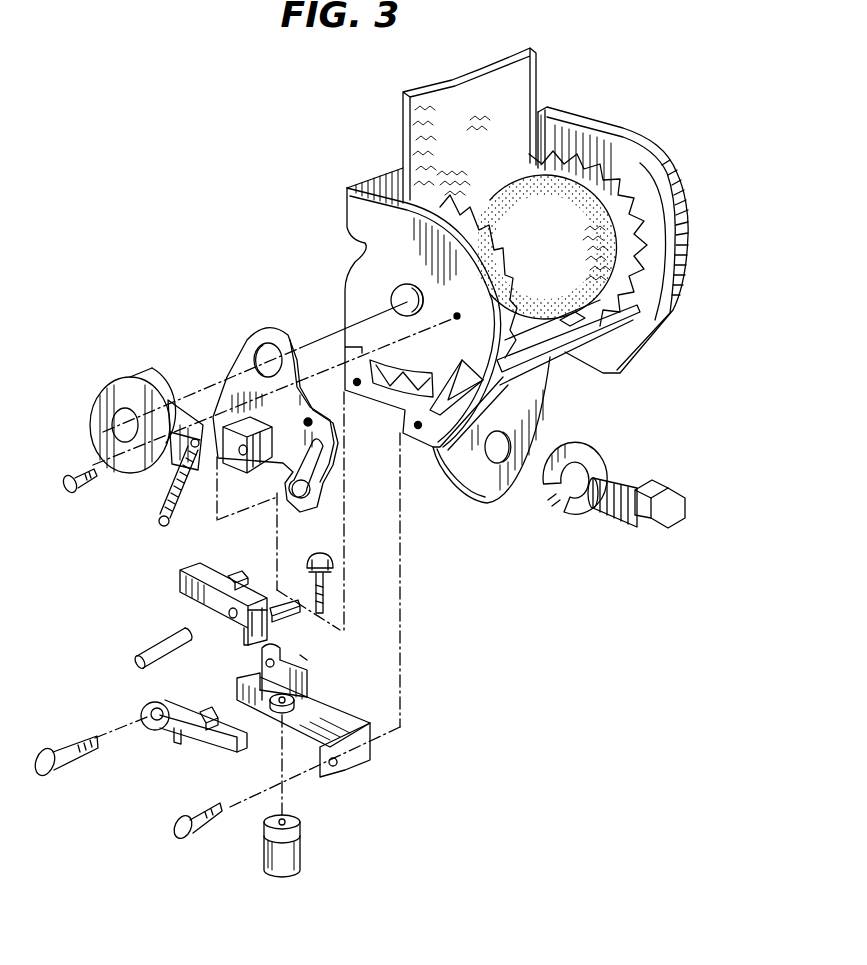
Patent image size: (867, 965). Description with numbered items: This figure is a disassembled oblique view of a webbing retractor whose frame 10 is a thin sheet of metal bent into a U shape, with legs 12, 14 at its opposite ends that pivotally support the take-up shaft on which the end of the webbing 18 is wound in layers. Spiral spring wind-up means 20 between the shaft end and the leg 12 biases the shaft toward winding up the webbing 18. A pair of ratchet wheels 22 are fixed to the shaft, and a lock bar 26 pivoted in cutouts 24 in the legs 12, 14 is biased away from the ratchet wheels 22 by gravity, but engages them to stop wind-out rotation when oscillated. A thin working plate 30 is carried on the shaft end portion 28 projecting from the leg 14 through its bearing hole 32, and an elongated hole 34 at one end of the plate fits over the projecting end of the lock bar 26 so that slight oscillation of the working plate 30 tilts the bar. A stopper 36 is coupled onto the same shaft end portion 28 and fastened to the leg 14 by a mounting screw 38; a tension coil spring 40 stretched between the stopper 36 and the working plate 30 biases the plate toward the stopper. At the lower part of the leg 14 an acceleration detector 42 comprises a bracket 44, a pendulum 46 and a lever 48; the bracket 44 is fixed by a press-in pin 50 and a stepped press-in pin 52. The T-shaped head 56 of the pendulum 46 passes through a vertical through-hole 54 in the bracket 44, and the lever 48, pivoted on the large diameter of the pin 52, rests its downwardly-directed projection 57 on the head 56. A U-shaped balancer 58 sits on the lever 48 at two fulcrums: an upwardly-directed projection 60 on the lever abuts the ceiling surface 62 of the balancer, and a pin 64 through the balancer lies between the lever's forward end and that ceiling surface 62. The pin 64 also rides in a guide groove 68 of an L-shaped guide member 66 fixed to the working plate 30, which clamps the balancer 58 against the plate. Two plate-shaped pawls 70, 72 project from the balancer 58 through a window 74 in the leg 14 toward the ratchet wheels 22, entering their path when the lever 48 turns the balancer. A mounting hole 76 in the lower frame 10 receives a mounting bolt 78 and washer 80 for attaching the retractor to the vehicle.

The frame 10 is at (368, 180).
The leg 12 is at (570, 119).
The leg 14 is at (345, 278).
The webbing 18 is at (527, 75).
The spiral spring wind-up means 20 is at (660, 157).
The ratchet wheels 22 is at (490, 257).
The cutouts 24 is at (458, 364).
The lock bar 26 is at (565, 360).
The end portion of shaft 28 is at (401, 287).
The working plate 30 is at (290, 383).
The bearing hole 32 is at (273, 350).
The elongated hole 34 is at (308, 495).
The stopper 36 is at (168, 383).
The mounting screw 38 is at (90, 485).
The tension coil spring 40 is at (172, 492).
The acceleration detector 42 is at (360, 668).
The bracket 44 is at (333, 717).
The pendulum 46 is at (302, 847).
The lever 48 is at (207, 740).
The press-in pin 50 is at (207, 823).
The press-in pin with a step 52 is at (67, 763).
The through-hole 54 is at (290, 700).
The head 56 is at (322, 560).
The downwardly-directed projection 57 is at (173, 733).
The balancer 58 is at (190, 605).
The upwardly-directed projection 60 is at (203, 710).
The ceiling surface 62 is at (230, 617).
The pin 64 is at (167, 657).
The guide member 66 is at (235, 430).
The guide groove 68 is at (242, 452).
The pawl 70 is at (233, 574).
The pawl 72 is at (281, 607).
The window 74 is at (393, 367).
The mounting hole 76 is at (513, 438).
The mounting bolt 78 is at (657, 490).
The washer 80 is at (588, 455).